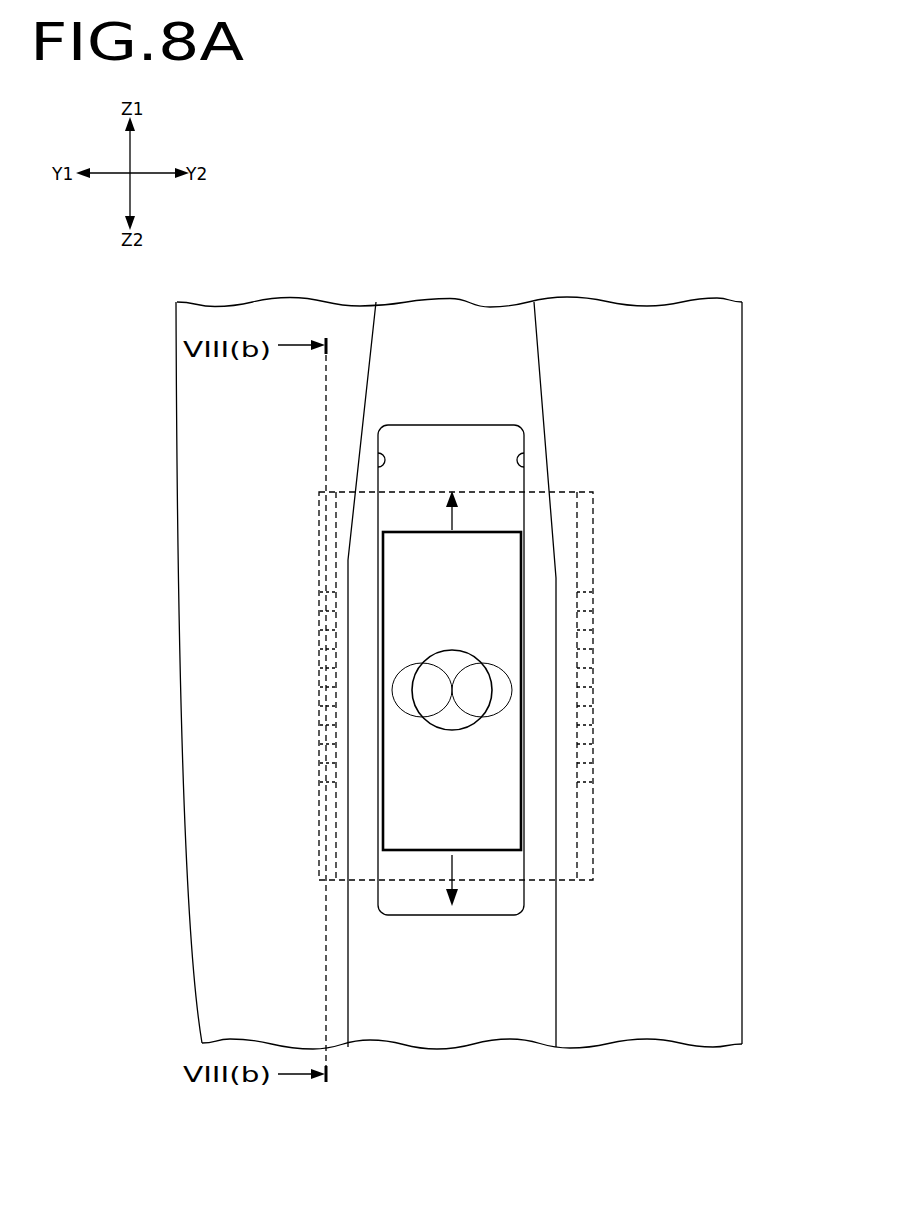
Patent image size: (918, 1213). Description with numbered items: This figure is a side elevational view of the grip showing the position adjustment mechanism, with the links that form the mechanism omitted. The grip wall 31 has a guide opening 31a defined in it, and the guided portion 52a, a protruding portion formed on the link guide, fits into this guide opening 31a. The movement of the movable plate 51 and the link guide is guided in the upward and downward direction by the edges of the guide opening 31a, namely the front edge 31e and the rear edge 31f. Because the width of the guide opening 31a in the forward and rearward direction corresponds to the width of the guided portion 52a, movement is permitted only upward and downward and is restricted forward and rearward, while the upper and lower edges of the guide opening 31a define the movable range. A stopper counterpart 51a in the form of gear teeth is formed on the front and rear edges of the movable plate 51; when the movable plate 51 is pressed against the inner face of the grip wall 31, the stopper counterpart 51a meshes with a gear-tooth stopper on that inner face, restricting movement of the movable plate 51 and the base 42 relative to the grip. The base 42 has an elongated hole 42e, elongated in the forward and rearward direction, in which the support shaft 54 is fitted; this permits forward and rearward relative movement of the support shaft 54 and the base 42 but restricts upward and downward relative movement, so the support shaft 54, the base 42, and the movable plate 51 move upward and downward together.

The grip wall 31 is at (722, 651).
The guide opening 31a is at (480, 473).
The front edge 31e is at (378, 463).
The rear edge 31f is at (524, 462).
The base 42 is at (553, 977).
The elongated hole 42e is at (484, 716).
The movable plate 51 is at (594, 541).
The stopper counterpart 51a is at (320, 636).
The guided portion 52a is at (504, 579).
The support shaft 54 is at (452, 672).